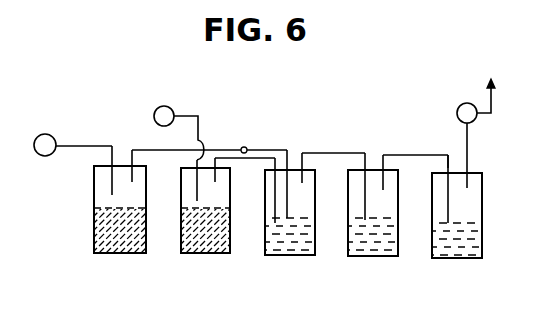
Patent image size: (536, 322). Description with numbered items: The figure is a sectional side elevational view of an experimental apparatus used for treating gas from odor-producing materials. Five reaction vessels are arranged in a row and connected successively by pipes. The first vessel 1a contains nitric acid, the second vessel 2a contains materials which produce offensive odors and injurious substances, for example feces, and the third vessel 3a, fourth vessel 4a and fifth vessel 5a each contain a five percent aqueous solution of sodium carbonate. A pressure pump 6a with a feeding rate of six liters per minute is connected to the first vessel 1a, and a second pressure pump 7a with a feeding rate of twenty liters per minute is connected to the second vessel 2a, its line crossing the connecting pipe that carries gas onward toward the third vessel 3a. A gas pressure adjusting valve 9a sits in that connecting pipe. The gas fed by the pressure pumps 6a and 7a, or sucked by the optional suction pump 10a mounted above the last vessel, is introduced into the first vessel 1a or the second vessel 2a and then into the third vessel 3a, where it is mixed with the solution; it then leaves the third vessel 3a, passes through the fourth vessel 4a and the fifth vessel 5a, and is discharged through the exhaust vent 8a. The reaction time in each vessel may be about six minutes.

The vessel containing nitric acid 1a is at (121, 253).
The vessel containing odor-producing materials 2a is at (207, 253).
The vessel containing sodium carbonate solution 3a is at (295, 246).
The vessel containing sodium carbonate solution 4a is at (375, 246).
The vessel containing sodium carbonate solution 5a is at (443, 259).
The pressure pump 6a is at (53, 119).
The pressure pump 7a is at (164, 106).
The exhaust vent 8a is at (449, 166).
The gas pressure adjusting valve 9a is at (244, 147).
The suction pump 10a is at (476, 120).